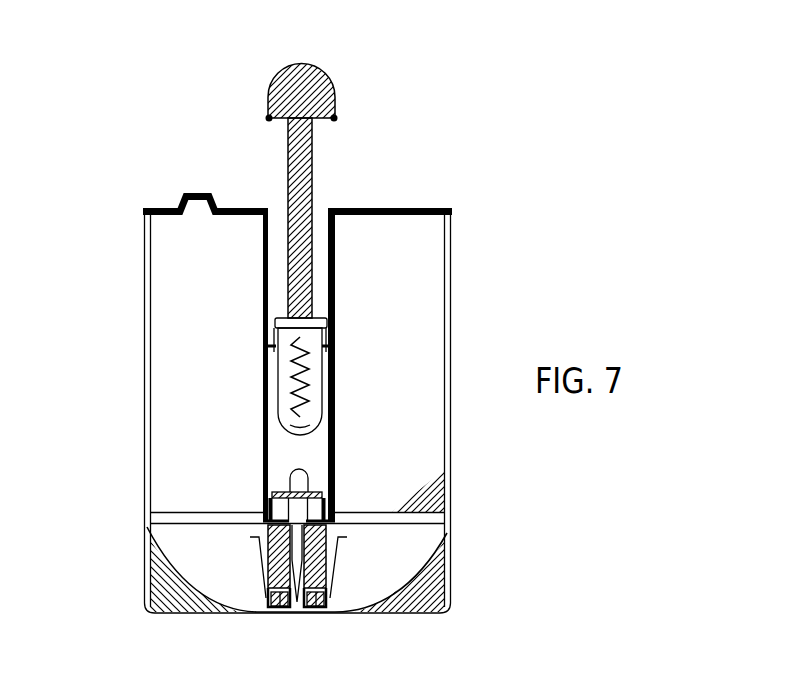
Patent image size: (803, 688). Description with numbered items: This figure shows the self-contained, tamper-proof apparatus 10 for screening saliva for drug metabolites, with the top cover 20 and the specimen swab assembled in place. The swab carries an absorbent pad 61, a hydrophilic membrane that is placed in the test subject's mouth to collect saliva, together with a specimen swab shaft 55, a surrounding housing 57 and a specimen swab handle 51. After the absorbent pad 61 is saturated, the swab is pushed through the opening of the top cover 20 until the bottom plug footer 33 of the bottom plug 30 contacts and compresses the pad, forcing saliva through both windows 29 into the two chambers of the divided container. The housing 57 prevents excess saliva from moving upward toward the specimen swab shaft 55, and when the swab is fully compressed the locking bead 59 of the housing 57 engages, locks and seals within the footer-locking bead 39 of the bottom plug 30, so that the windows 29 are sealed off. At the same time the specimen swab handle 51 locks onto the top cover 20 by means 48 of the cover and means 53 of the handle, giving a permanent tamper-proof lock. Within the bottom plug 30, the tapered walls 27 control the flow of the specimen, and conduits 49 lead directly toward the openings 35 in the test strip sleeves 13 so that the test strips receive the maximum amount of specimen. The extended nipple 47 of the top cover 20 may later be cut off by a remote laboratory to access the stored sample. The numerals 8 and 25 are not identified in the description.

The housing 8 is at (452, 360).
The apparatus 10 is at (500, 232).
The test strip sleeves 13 is at (336, 578).
The top cover 20 is at (418, 208).
The inner wall 25 is at (340, 317).
The tapered walls 27 is at (431, 562).
The windows 29 is at (297, 483).
The bottom plug 30 is at (165, 540).
The bottom plug footer 33 is at (313, 482).
The openings 35 is at (270, 614).
The footer-locking bead 39 is at (332, 492).
The extended nipple 47 is at (177, 193).
The locking means of top cover 48 is at (268, 213).
The conduits 49 is at (295, 612).
The specimen swab handle 51 is at (323, 84).
The locking means of specimen swab handle 53 is at (348, 113).
The specimen swab shaft 55 is at (288, 242).
The housing 57 is at (274, 328).
The locking bead 59 is at (272, 355).
The absorbent pad 61 is at (314, 370).